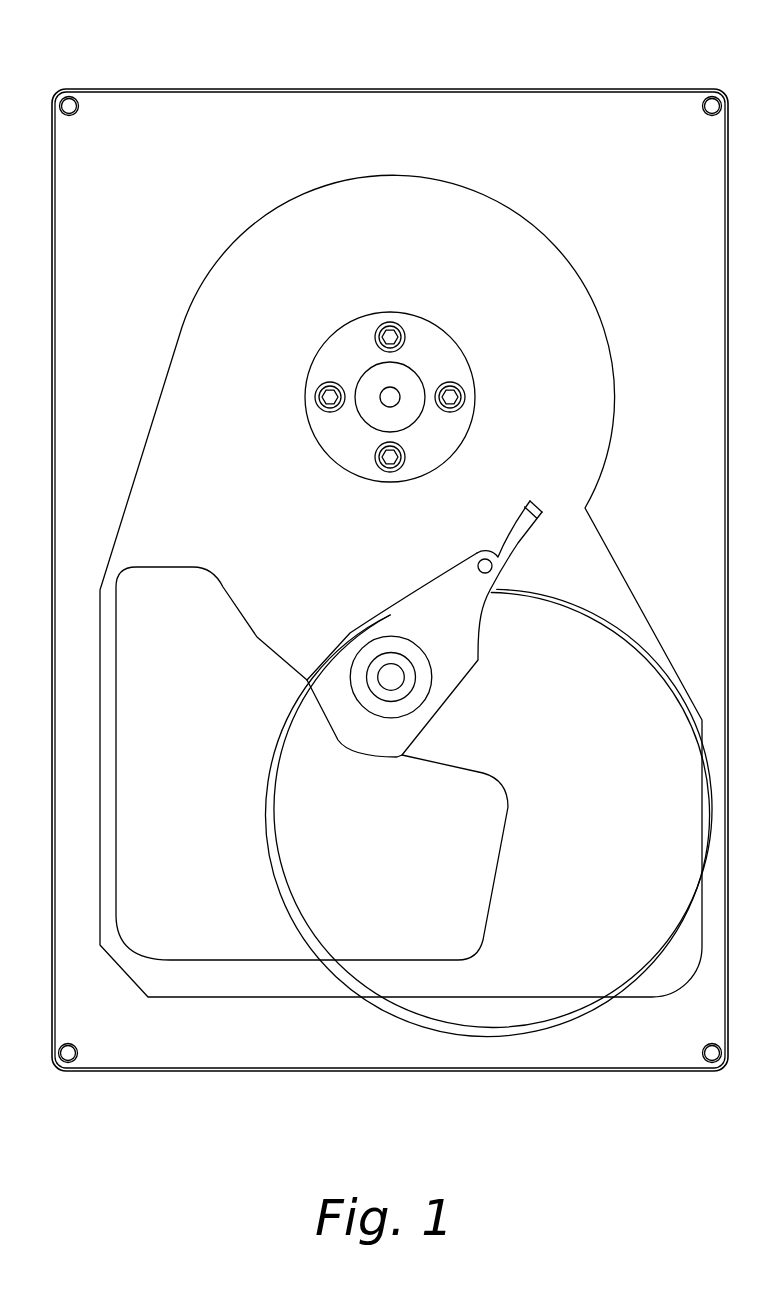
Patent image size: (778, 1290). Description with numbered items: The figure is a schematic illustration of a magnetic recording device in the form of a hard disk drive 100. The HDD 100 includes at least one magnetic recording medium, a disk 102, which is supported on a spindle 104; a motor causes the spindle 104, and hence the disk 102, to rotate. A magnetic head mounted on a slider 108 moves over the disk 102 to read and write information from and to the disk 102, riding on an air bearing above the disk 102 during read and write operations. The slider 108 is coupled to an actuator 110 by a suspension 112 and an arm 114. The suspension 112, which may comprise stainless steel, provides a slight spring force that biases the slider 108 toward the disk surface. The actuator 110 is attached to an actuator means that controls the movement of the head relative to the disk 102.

The hard disk drive 100 is at (627, 40).
The disk 102 is at (293, 242).
The spindle 104 is at (377, 378).
The slider 108 is at (531, 500).
The actuator 110 is at (468, 872).
The suspension 112 is at (495, 543).
The arm 114 is at (452, 623).